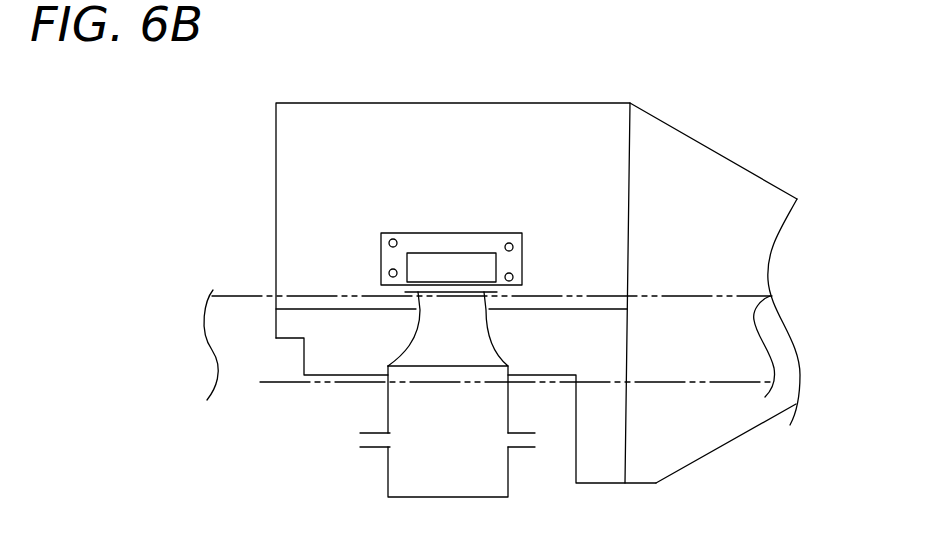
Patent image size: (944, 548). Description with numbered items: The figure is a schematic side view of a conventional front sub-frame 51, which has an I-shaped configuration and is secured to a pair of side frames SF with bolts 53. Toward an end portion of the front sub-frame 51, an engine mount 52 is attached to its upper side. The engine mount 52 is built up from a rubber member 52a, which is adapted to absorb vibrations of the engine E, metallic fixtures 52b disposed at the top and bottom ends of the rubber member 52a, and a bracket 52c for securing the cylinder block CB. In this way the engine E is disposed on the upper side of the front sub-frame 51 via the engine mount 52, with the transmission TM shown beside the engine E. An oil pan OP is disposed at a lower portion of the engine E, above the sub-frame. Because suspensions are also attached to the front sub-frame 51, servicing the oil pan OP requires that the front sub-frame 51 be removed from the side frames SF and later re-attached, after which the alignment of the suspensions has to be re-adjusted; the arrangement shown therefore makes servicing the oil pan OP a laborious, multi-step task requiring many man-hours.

The cylinder block CB is at (308, 131).
The transmission TM is at (730, 188).
The engine E is at (267, 192).
The oil pan OP is at (283, 330).
The side frame SF is at (218, 447).
The engine mount 52 is at (520, 335).
The rubber member 52a is at (397, 337).
The metallic fixture 52b is at (420, 272).
The bracket 52c is at (492, 243).
The front sub-frame 51 is at (493, 465).
The bolt 53 is at (466, 7).